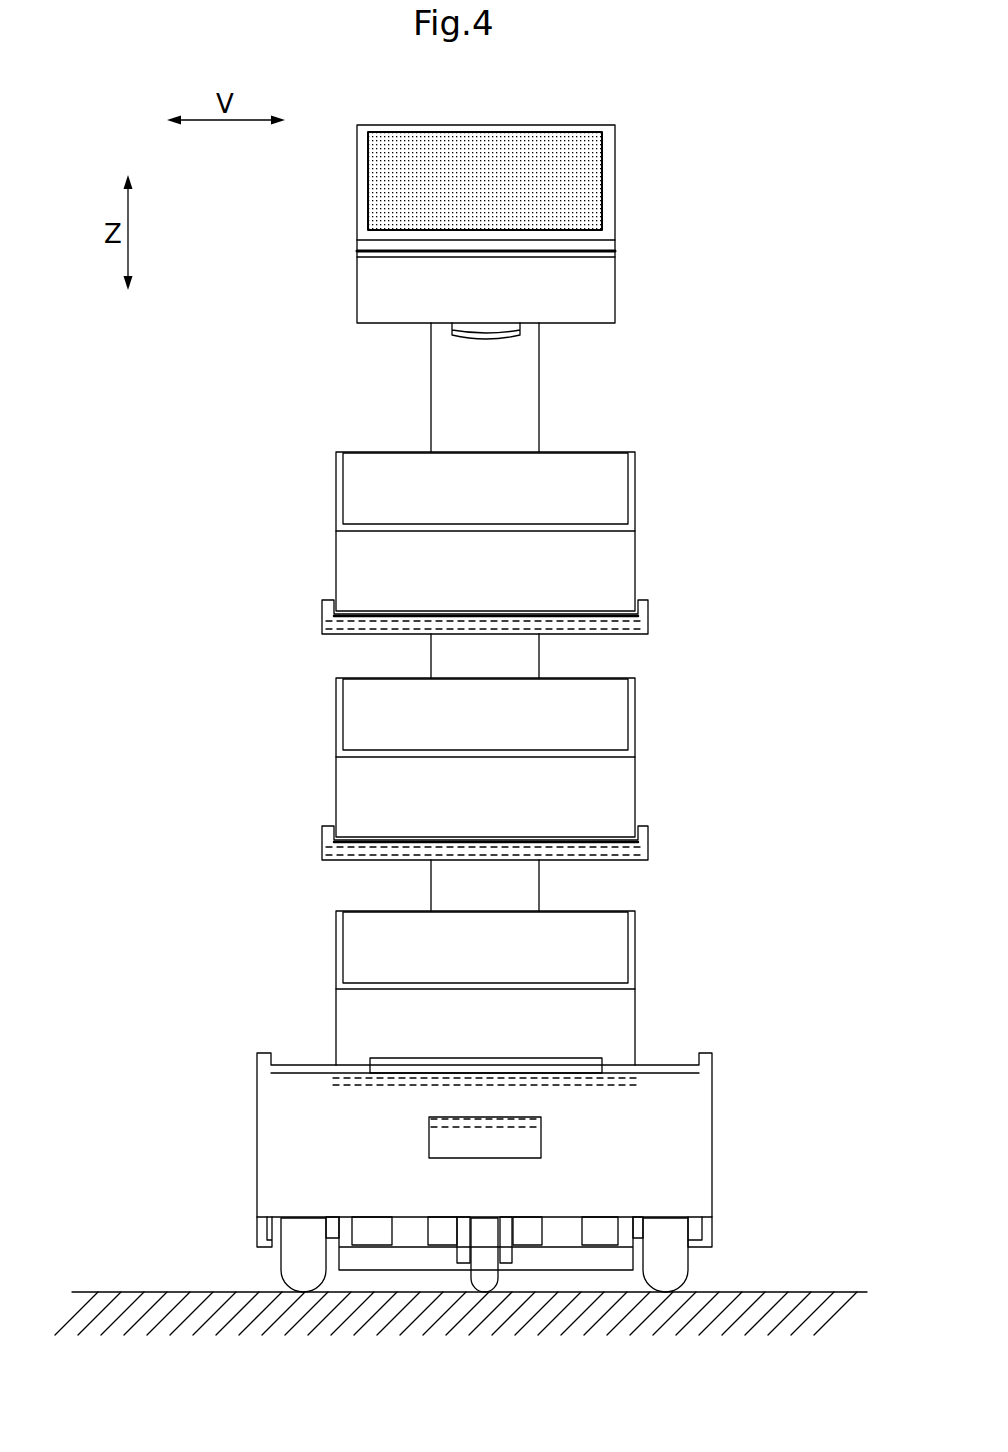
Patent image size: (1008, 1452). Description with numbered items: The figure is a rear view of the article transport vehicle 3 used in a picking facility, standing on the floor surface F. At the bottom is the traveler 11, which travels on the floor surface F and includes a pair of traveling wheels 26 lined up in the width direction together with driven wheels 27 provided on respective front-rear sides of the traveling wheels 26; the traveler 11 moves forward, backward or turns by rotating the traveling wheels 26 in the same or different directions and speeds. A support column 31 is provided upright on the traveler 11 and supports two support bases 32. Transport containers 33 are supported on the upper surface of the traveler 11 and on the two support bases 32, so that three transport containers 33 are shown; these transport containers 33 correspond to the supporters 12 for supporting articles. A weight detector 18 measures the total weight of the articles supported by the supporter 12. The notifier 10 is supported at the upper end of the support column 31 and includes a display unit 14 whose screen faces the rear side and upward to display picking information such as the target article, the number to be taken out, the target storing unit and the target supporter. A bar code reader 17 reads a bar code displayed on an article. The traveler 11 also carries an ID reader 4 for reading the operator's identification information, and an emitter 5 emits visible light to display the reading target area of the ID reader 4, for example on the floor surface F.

The article transport vehicle 3 is at (253, 498).
The notifier 10 is at (617, 183).
The display unit 14 is at (485, 165).
The bar code reader 17 is at (462, 342).
The support column 31 is at (530, 400).
The transport container 33 is at (635, 1012).
The supporter 12 is at (533, 724).
The support base 32 is at (648, 615).
The weight detector 18 is at (320, 618).
The traveler 11 is at (700, 1113).
The ID reader 4 is at (541, 1143).
The emitter 5 is at (447, 1138).
The traveling wheel 26 is at (280, 1268).
The driven wheel 27 is at (500, 1278).
The floor surface F is at (160, 1290).